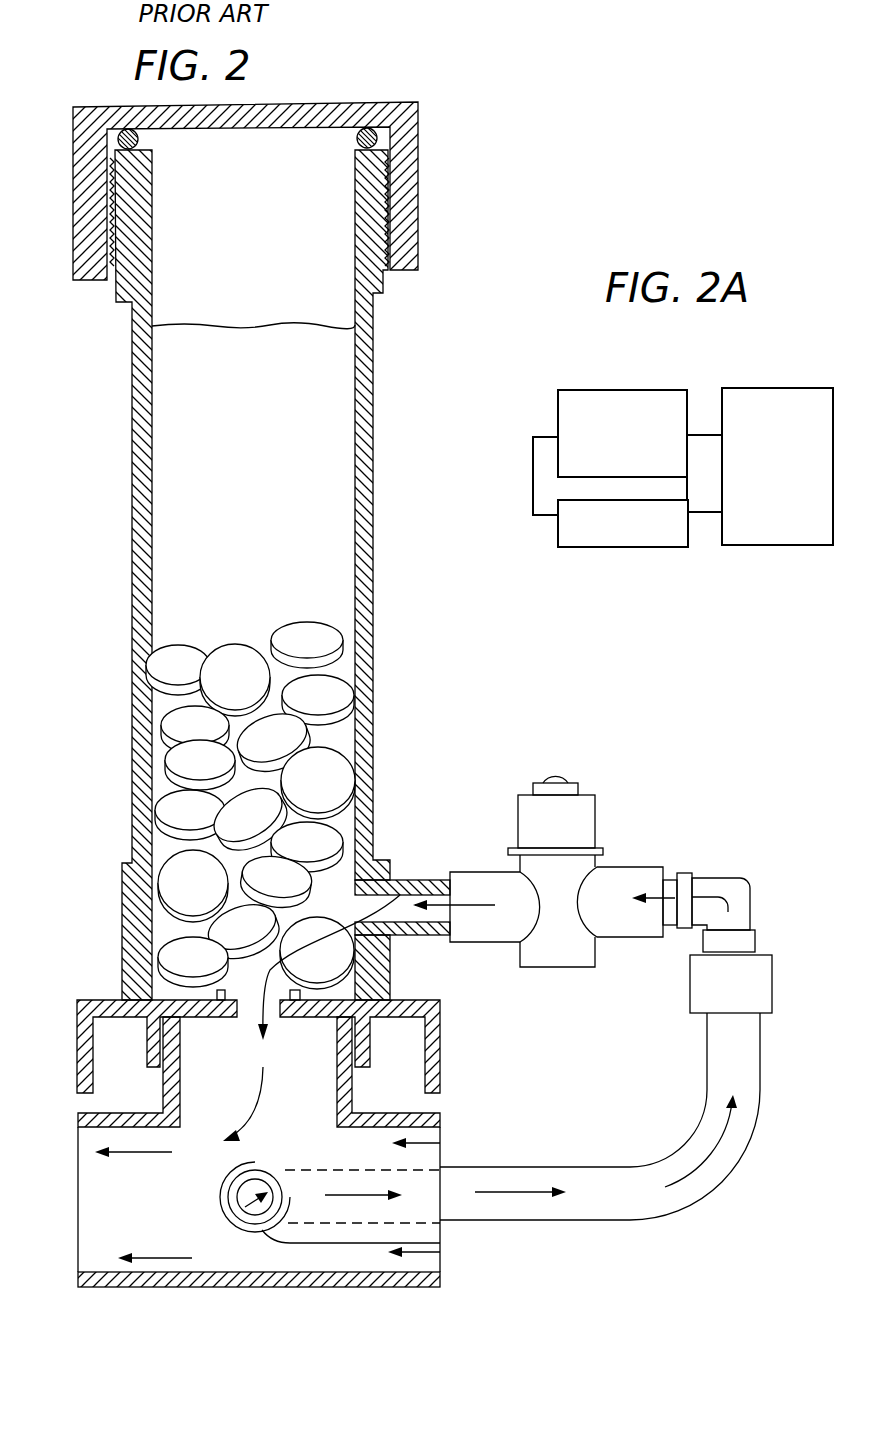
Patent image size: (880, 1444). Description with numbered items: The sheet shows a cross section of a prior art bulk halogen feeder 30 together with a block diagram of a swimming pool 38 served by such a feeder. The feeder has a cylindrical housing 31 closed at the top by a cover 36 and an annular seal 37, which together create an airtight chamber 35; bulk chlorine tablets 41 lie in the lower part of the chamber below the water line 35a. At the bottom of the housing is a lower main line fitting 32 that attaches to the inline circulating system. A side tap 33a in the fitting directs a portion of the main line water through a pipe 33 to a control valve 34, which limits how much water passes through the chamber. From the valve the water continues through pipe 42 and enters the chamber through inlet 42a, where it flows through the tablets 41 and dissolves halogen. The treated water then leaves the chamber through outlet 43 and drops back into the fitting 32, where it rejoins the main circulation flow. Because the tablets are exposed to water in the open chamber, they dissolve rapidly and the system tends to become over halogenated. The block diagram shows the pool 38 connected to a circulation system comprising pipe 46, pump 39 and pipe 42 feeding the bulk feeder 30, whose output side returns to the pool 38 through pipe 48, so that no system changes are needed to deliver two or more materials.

In FIG. 2, the bulk halogen feeder 30 is at (462, 161).
In FIG. 2A, the bulk halogen feeder 30 is at (605, 388).
In FIG. 2, the cylindrical housing 31 is at (370, 448).
In FIG. 2, the lower main line fitting 32 is at (443, 1108).
In FIG. 2, the pipe 33 is at (583, 1167).
In FIG. 2, the side tap 33a is at (253, 1207).
In FIG. 2, the control valve 34 is at (597, 800).
In FIG. 2, the chamber 35 is at (237, 424).
In FIG. 2, the water line 35a is at (283, 323).
In FIG. 2, the cover 36 is at (87, 195).
In FIG. 2, the annular seal 37 is at (122, 142).
In FIG. 2A, the swimming pool 38 is at (752, 387).
In FIG. 2A, the pump 39 is at (607, 547).
In FIG. 2, the bulk chlorine tablets 41 is at (235, 677).
In FIG. 2, the pipe 42 is at (407, 878).
In FIG. 2A, the pipe 42 is at (533, 457).
In FIG. 2, the inlet 42a is at (410, 890).
In FIG. 2, the outlet 43 is at (255, 1003).
In FIG. 2A, the pipe 46 is at (703, 513).
In FIG. 2A, the pipe 48 is at (702, 433).